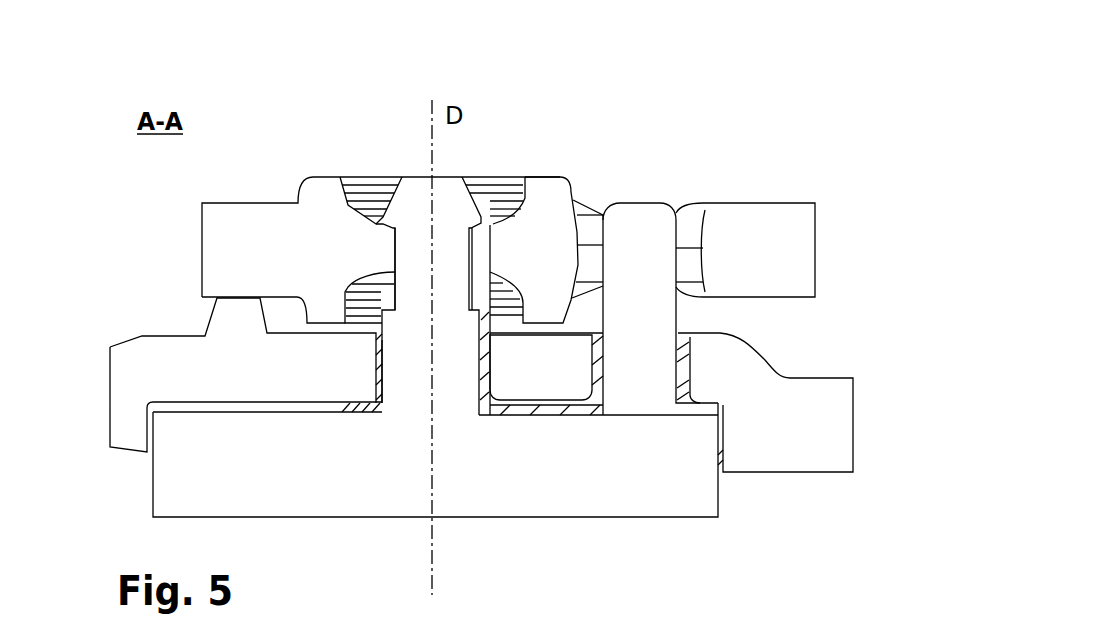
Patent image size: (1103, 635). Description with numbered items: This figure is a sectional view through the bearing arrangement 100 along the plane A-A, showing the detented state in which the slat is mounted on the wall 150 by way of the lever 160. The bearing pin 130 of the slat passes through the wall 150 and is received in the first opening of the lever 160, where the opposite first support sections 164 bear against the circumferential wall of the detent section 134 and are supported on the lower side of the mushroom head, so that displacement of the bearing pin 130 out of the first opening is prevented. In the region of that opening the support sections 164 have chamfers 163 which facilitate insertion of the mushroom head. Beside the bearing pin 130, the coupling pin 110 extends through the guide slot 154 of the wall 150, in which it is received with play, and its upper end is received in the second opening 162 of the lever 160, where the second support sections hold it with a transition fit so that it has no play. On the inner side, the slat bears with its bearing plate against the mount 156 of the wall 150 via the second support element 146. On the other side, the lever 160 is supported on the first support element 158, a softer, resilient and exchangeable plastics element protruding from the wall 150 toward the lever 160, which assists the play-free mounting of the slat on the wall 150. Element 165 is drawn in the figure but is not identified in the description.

The bearing arrangement 100 is at (718, 91).
The coupling pin 110 is at (637, 200).
The bearing pin 130 is at (415, 168).
The detent section 134 is at (409, 258).
The second support element 146 is at (348, 412).
The wall 150 is at (122, 363).
The guide slot 154 is at (682, 349).
The mount 156 is at (148, 447).
The first support element 158 is at (228, 313).
The lever 160 is at (797, 183).
The second opening 162 is at (599, 216).
The chamfers 163 is at (362, 195).
The first support sections 164 is at (388, 250).
The body 165 is at (313, 183).